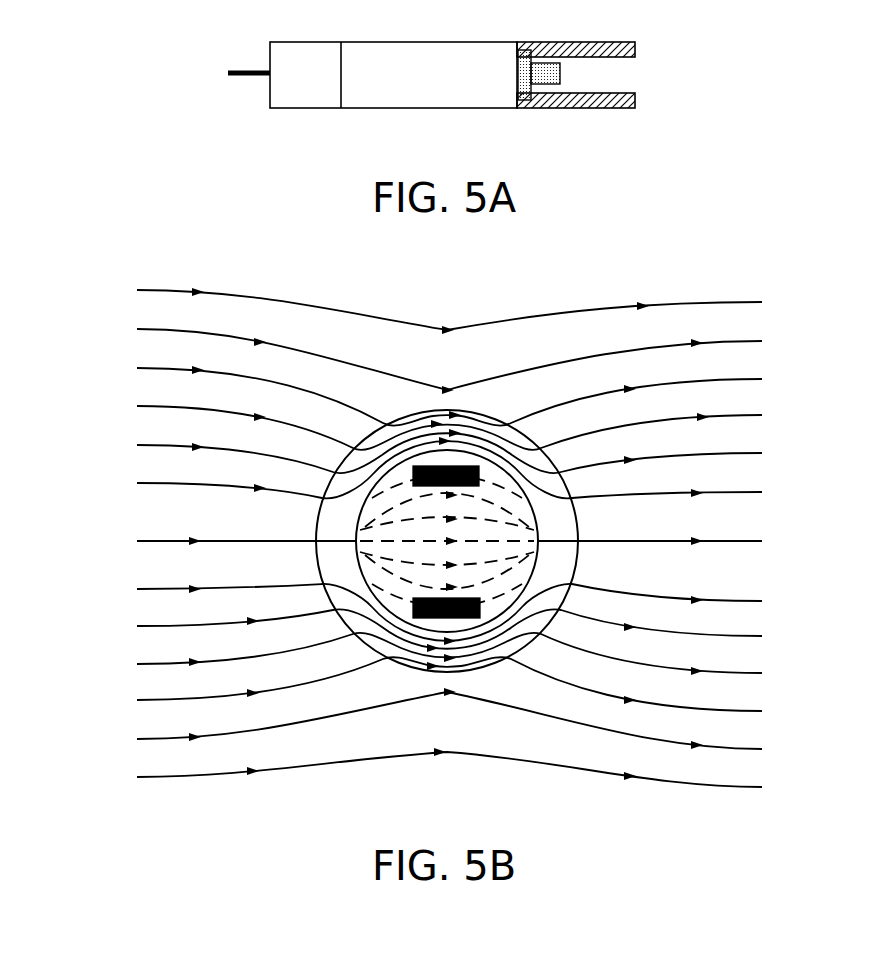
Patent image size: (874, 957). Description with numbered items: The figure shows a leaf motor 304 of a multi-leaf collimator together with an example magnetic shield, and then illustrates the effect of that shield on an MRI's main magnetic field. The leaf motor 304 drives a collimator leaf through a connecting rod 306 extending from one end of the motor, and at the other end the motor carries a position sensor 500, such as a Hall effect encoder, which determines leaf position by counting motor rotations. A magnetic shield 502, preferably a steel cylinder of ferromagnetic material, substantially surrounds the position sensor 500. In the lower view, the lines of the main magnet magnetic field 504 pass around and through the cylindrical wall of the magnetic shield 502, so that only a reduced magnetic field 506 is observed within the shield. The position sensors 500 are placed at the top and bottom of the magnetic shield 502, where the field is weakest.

In FIG. 5A, the leaf motor 304 is at (456, 83).
In FIG. 5A, the connecting rod 306 is at (250, 70).
In FIG. 5A, the position sensor 500 is at (560, 74).
In FIG. 5B, the position sensor 500 is at (468, 465).
In FIG. 5A, the magnetic shield 502 is at (583, 96).
In FIG. 5B, the magnetic shield 502 is at (528, 432).
In FIG. 5B, the main magnet magnetic field 504 is at (245, 291).
In FIG. 5B, the reduced magnetic field 506 is at (398, 500).